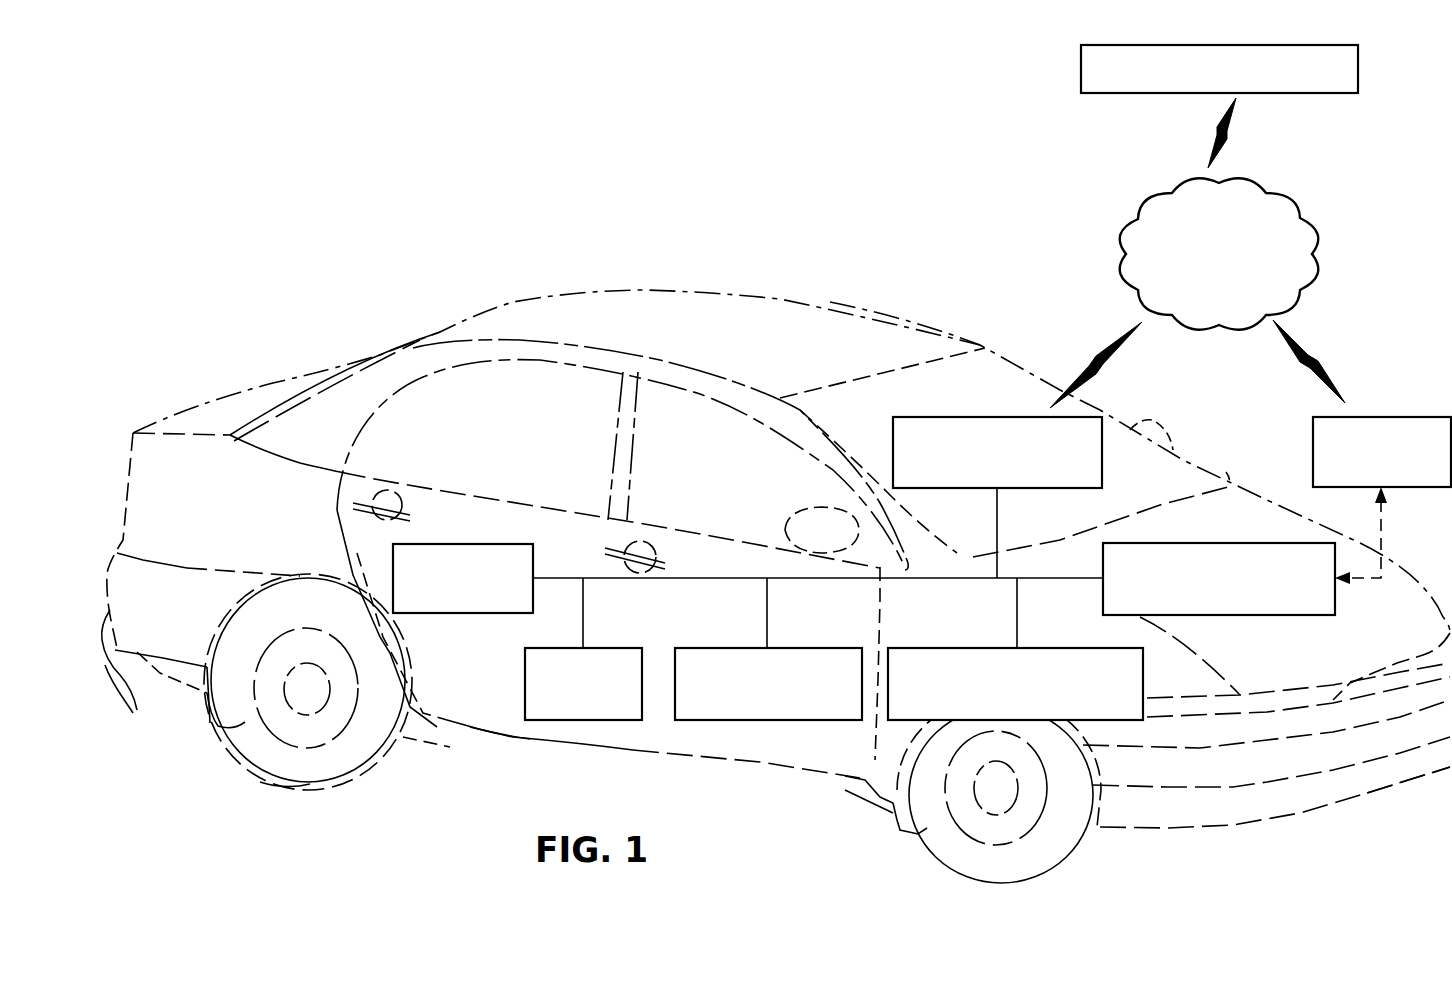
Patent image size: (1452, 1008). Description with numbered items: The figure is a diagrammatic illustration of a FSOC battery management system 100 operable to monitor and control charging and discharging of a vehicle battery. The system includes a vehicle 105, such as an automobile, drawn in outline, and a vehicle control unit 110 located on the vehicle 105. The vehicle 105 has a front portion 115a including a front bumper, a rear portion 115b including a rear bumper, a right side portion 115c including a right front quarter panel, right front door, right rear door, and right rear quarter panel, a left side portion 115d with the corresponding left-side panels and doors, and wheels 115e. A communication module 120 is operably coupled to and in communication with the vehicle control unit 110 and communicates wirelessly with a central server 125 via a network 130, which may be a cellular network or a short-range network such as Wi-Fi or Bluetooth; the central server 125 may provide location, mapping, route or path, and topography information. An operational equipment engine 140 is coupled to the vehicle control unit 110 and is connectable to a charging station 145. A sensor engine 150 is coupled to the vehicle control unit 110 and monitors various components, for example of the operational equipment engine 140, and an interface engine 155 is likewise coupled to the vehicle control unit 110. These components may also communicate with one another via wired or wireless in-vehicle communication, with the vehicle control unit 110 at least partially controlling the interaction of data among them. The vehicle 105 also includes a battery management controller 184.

The FSOC battery management system 100 is at (435, 147).
The vehicle 105 is at (596, 288).
The vehicle control unit 110 is at (732, 647).
The front portion 115a is at (1385, 789).
The rear portion 115b is at (137, 710).
The right side portion 115c is at (497, 742).
The left side portion 115d is at (877, 312).
The wheels 115e is at (285, 780).
The communication module 120 is at (983, 416).
The central server 125 is at (1362, 70).
The network 130 is at (1313, 232).
The operational equipment engine 140 is at (1251, 616).
The charging station 145 is at (1393, 416).
The sensor engine 150 is at (618, 647).
The interface engine 155 is at (462, 614).
The battery management controller 184 is at (1043, 647).